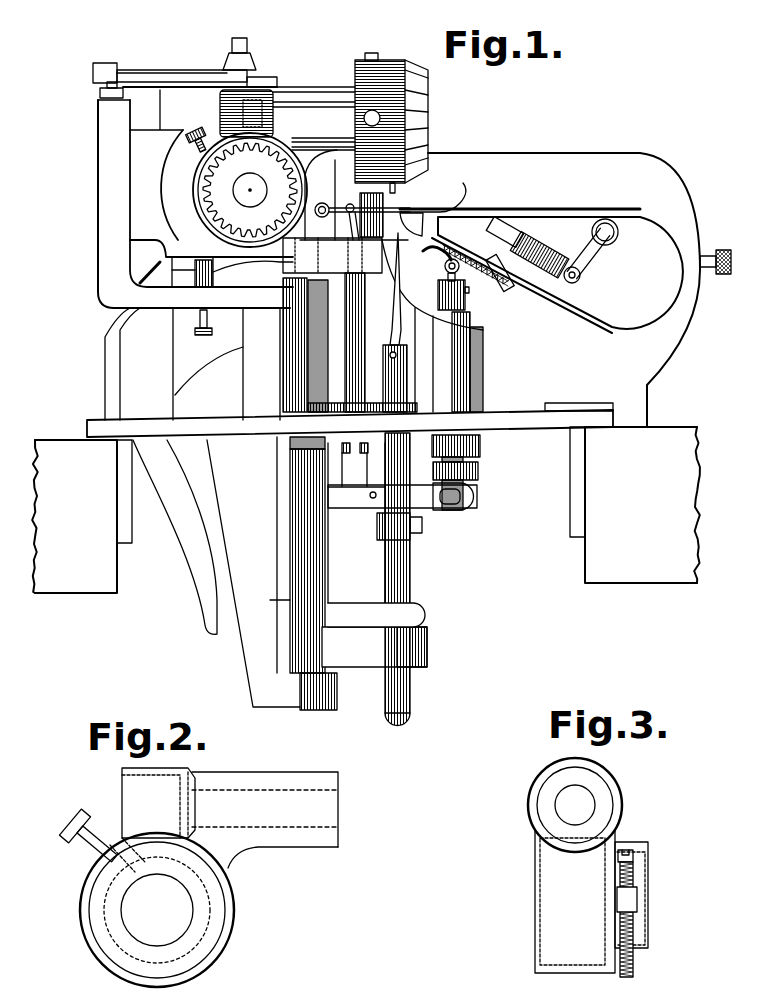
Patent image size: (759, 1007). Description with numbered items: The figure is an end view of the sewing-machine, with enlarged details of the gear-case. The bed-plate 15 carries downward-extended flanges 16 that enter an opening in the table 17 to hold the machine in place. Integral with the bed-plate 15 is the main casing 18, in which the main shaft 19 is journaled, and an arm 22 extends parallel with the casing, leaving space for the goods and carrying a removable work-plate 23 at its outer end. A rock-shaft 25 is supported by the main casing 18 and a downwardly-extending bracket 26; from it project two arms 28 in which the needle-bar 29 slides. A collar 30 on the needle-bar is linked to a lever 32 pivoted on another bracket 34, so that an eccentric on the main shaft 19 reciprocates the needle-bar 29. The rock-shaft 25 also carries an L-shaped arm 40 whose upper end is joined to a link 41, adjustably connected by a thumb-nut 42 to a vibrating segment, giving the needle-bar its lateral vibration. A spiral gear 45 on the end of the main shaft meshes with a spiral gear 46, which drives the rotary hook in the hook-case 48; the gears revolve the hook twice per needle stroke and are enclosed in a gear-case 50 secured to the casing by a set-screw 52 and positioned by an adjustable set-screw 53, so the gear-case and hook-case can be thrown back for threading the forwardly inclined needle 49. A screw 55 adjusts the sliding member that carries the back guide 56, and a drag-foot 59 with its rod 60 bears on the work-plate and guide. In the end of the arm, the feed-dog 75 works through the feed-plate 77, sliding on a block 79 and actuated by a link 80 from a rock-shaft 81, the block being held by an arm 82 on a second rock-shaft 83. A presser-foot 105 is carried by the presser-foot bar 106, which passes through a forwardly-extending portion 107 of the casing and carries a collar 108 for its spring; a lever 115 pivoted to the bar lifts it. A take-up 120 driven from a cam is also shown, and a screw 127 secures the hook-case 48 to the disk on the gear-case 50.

In FIG. 1, the bed-plate 15 is at (516, 412).
In FIG. 1, the downward-extended flanges 16 is at (127, 508).
In FIG. 1, the table 17 is at (366, 510).
In FIG. 1, the main casing 18 is at (183, 163).
In FIG. 1, the main shaft 19 is at (243, 192).
In FIG. 1, the arm 22 is at (699, 288).
In FIG. 1, the work-plate 23 is at (552, 209).
In FIG. 1, the rock-shaft 25 is at (307, 356).
In FIG. 1, the downwardly-extending bracket 26 is at (272, 573).
In FIG. 1, the arms 28 is at (310, 442).
In FIG. 1, the needle-bar 29 is at (405, 568).
In FIG. 1, the collar 30 is at (388, 532).
In FIG. 1, the lever 32 is at (355, 612).
In FIG. 1, the downwardly-extending bracket 34 is at (203, 542).
In FIG. 1, the L-shaped arm 40 is at (98, 211).
In FIG. 1, the link 41 is at (178, 76).
In FIG. 1, the thumb-nut 42 is at (245, 56).
In FIG. 1, the spiral gear 45 is at (260, 173).
In FIG. 1, the spiral gear 46 is at (222, 108).
In FIG. 1, the hook-case 48 is at (428, 121).
In FIG. 1, the needle 49 is at (398, 263).
In FIG. 1, the gear-case 50 is at (310, 100).
In FIG. 2, the gear-case 50 is at (209, 877).
In FIG. 3, the gear-case 50 is at (588, 865).
In FIG. 2, the set-screw 52 is at (67, 841).
In FIG. 3, the set-screw 53 is at (637, 928).
In FIG. 1, the screw 55 is at (722, 250).
In FIG. 1, the back guide 56 is at (412, 217).
In FIG. 1, the drag-foot 59 is at (465, 187).
In FIG. 1, the rod 60 is at (350, 294).
In FIG. 1, the feed-dog 75 is at (508, 288).
In FIG. 1, the feed-plate 77 is at (535, 294).
In FIG. 1, the block 79 is at (514, 222).
In FIG. 1, the link 80 is at (593, 258).
In FIG. 1, the rock-shaft 81 is at (618, 233).
In FIG. 1, the arm 82 is at (549, 258).
In FIG. 1, the rock-shaft 83 is at (578, 281).
In FIG. 1, the presser-foot 105 is at (486, 284).
In FIG. 1, the presser-foot bar 106 is at (470, 457).
In FIG. 1, the forwardly-extending portion 107 is at (481, 368).
In FIG. 1, the collar 108 is at (478, 470).
In FIG. 1, the lever 115 is at (470, 502).
In FIG. 1, the take-up 120 is at (203, 336).
In FIG. 1, the screw 127 is at (374, 47).